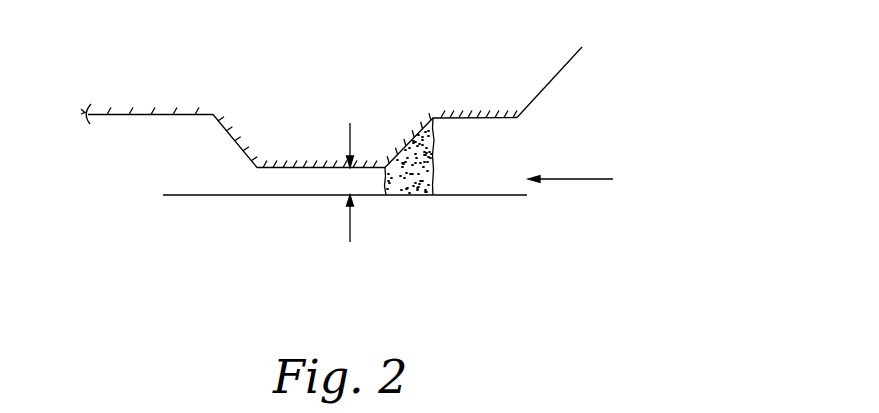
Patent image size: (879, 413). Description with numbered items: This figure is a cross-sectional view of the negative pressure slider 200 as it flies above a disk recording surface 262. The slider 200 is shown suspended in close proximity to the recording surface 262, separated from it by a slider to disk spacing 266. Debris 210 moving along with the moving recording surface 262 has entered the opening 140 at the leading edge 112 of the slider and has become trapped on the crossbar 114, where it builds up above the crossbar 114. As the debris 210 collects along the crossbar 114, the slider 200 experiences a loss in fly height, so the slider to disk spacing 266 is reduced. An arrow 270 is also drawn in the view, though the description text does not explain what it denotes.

The leading edge 112 is at (507, 63).
The crossbar 114 is at (270, 177).
The opening 140 is at (483, 130).
The negative pressure slider 200 is at (647, 78).
The debris 210 is at (420, 206).
The disk recording surface 262 is at (290, 197).
The slider to disk spacing 266 is at (348, 128).
The direction arrow 270 is at (598, 179).